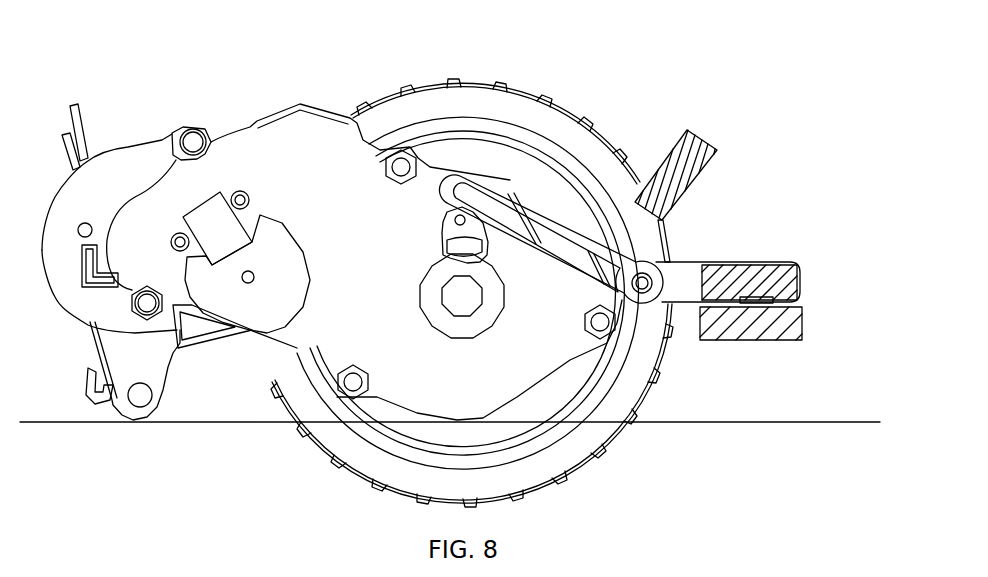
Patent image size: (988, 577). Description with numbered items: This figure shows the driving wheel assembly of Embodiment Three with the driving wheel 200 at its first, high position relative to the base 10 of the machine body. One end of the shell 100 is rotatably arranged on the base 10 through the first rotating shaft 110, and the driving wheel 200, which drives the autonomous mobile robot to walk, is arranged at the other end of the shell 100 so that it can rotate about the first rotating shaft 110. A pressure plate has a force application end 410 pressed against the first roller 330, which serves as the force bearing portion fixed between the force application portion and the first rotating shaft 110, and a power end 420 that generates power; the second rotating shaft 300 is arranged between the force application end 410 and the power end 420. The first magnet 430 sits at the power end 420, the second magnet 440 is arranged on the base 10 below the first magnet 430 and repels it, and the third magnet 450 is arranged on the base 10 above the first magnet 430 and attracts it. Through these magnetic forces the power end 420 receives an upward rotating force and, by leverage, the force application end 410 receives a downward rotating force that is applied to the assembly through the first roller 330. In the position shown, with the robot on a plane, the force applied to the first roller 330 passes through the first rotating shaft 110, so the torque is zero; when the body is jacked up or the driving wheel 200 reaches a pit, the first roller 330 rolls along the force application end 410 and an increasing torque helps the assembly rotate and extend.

The base 10 is at (450, 441).
The shell 100 is at (275, 145).
The first rotating shaft 110 is at (137, 398).
The driving wheel 200 is at (492, 118).
The second rotating shaft 300 is at (648, 287).
The first roller 330 is at (445, 212).
The force application end 410 is at (520, 190).
The power end 420 is at (683, 267).
The first magnet 430 is at (775, 283).
The second magnet 440 is at (775, 323).
The third magnet 450 is at (690, 160).